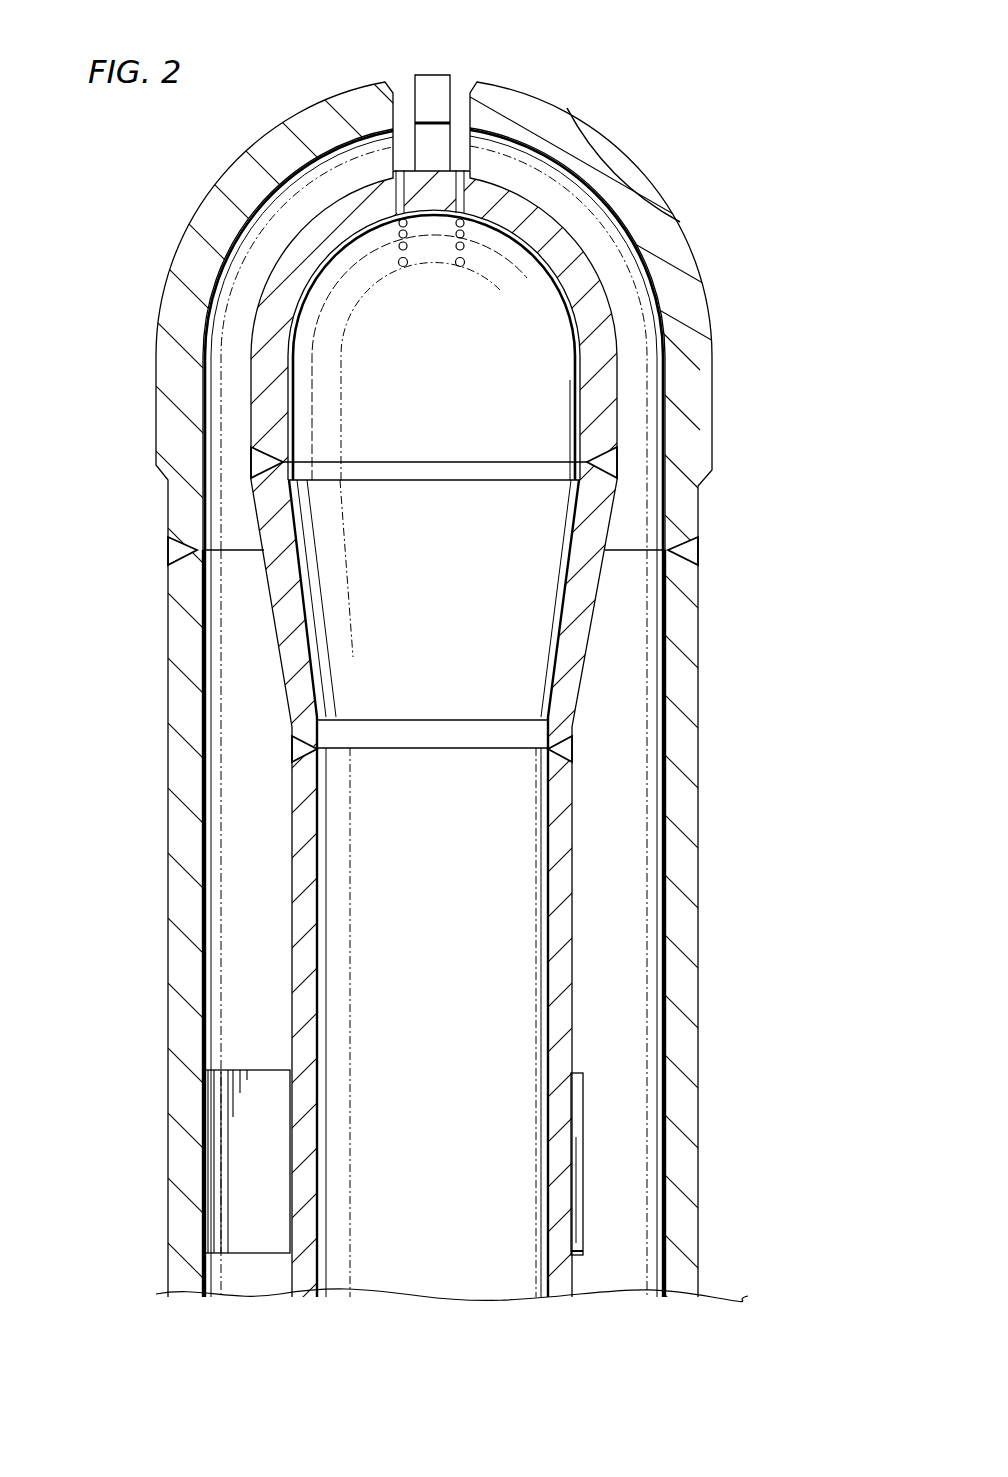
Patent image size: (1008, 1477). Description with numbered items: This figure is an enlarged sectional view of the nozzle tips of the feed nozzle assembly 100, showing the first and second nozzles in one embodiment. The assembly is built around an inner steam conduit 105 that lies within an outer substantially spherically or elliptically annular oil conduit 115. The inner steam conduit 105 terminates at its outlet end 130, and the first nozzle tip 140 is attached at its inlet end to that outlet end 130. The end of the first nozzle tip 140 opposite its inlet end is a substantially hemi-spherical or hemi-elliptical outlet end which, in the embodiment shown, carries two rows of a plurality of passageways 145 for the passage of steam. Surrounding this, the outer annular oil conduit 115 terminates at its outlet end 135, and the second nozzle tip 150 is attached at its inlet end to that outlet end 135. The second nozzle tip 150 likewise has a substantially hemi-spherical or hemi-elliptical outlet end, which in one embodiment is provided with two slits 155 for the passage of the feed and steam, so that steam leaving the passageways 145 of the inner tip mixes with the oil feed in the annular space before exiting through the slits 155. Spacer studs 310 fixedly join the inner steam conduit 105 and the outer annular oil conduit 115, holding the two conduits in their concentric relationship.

The feed nozzle assembly 100 is at (97, 334).
The inner steam conduit 105 is at (292, 958).
The outer annular oil conduit 115 is at (167, 863).
The outlet end of inner steam conduit 130 is at (577, 805).
The outlet end of outer annular oil conduit 135 is at (698, 636).
The first nozzle tip 140 is at (612, 368).
The passageways 145 is at (403, 266).
The second nozzle tip 150 is at (713, 262).
The slits 155 is at (458, 95).
The spacer studs 310 is at (217, 1157).